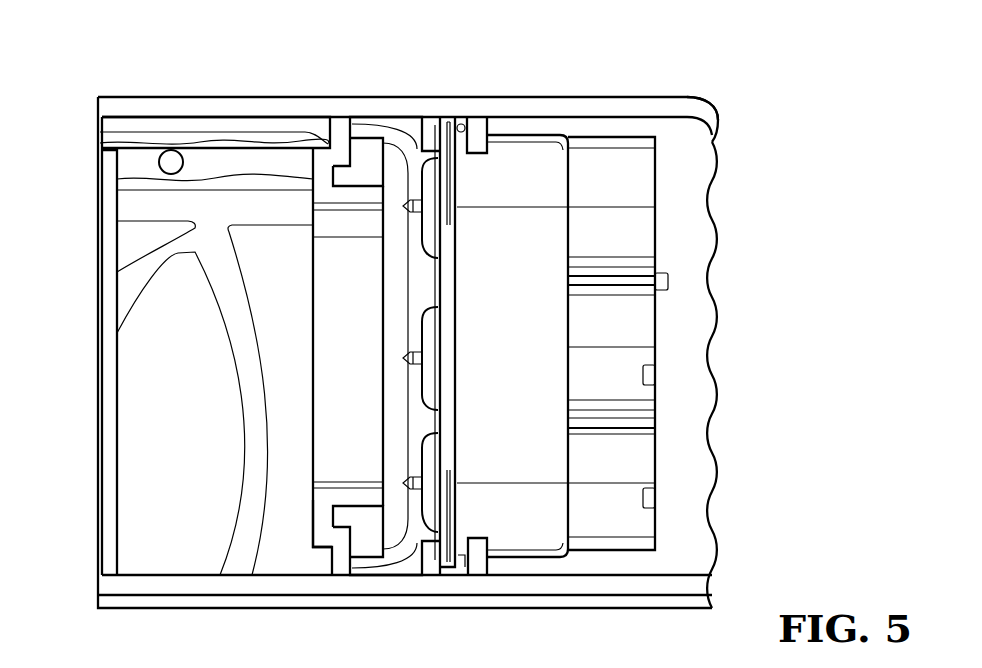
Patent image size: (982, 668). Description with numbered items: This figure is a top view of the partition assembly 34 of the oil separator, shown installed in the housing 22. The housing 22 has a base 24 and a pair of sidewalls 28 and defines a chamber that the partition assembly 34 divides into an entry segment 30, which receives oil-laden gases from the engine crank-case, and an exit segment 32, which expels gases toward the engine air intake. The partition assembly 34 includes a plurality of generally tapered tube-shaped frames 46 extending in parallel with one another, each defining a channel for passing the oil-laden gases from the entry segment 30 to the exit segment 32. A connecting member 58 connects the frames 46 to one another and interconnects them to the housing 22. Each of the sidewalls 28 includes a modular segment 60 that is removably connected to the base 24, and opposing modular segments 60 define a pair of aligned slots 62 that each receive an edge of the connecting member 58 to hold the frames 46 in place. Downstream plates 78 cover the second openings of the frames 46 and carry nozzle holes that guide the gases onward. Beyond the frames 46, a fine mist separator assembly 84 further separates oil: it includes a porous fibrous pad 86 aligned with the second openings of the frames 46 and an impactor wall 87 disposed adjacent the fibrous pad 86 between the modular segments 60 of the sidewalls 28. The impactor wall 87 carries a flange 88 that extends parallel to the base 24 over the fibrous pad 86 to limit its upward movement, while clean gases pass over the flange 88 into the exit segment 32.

The housing 22 is at (622, 98).
The base 24 is at (257, 163).
The sidewalls 28 is at (453, 96).
The entry segment 30 is at (668, 124).
The exit segment 32 is at (122, 122).
The partition assembly 34 is at (541, 134).
The frames 46 is at (608, 185).
The connecting member 58 is at (447, 133).
The modular segment 60 is at (178, 102).
The slots 62 is at (464, 126).
The downstream plates 78 is at (432, 252).
The fine mist separator assembly 84 is at (314, 508).
The fibrous pad 86 is at (362, 548).
The impactor wall 87 is at (323, 157).
The flange 88 is at (355, 275).